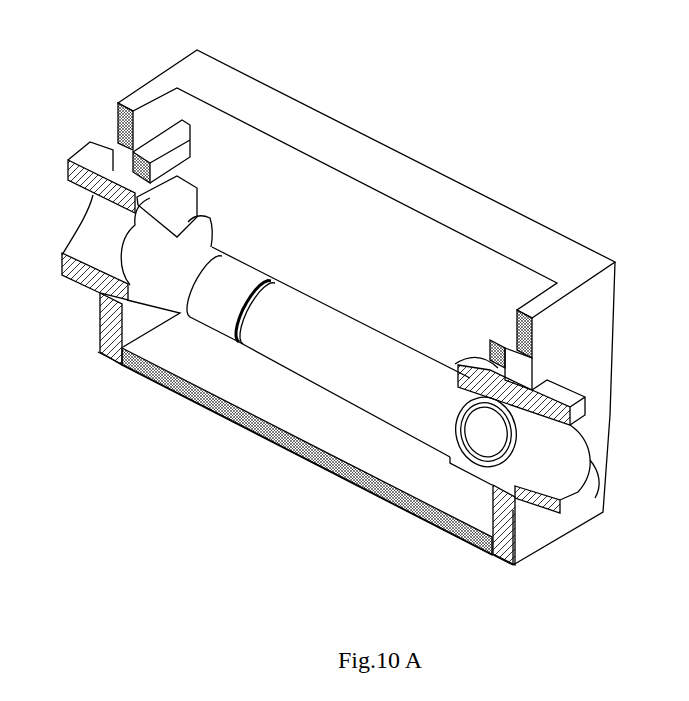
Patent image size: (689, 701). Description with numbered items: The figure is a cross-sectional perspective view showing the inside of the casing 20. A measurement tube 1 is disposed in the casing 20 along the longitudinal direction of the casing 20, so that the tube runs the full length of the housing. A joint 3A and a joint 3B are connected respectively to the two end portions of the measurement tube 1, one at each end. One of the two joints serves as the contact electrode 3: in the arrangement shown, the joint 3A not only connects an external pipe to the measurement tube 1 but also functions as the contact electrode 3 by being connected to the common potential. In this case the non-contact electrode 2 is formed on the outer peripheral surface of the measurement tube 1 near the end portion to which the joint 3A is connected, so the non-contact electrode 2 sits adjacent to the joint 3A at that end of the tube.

The casing 20 is at (193, 65).
The contact electrode 3 is at (351, 334).
The joint 3A is at (88, 153).
The joint 3B is at (560, 397).
The measurement tube 1 is at (320, 365).
The non-contact electrode 2 is at (220, 322).